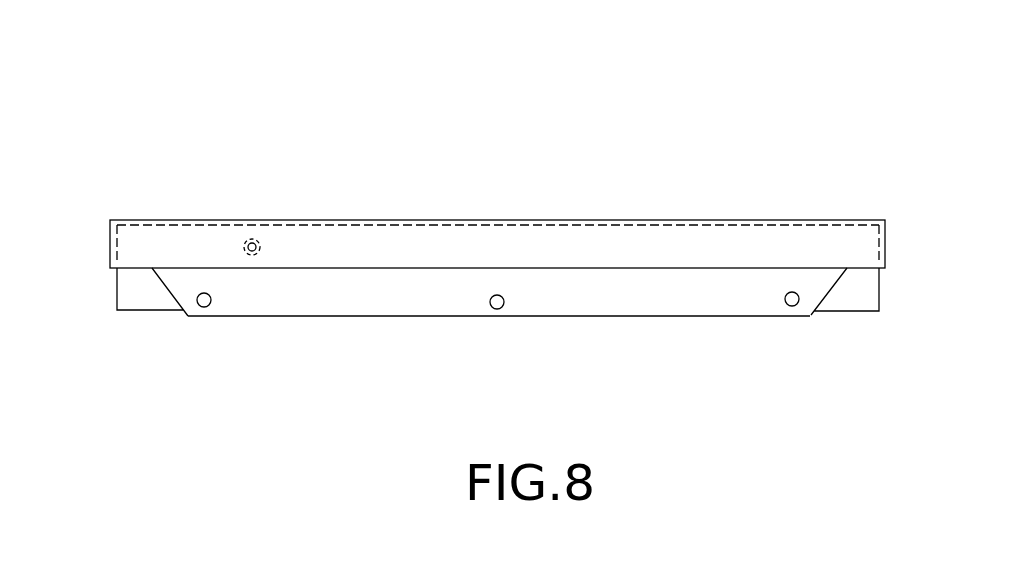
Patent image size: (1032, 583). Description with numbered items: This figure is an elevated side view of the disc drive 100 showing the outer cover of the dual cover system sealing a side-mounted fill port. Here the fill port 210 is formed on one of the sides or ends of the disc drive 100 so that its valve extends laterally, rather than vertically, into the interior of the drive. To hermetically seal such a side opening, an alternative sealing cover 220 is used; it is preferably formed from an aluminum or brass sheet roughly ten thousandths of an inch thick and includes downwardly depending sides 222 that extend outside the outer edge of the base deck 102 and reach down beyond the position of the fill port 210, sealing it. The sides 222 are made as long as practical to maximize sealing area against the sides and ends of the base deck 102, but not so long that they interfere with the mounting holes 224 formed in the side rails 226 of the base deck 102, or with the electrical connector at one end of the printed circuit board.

The disc drive 100 is at (103, 152).
The base deck 102 is at (298, 333).
The fill port 210 is at (258, 245).
The sealing cover 220 is at (710, 218).
The downwardly depending sides 222 is at (735, 253).
The mounting holes 224 is at (507, 305).
The side rails 226 is at (395, 293).